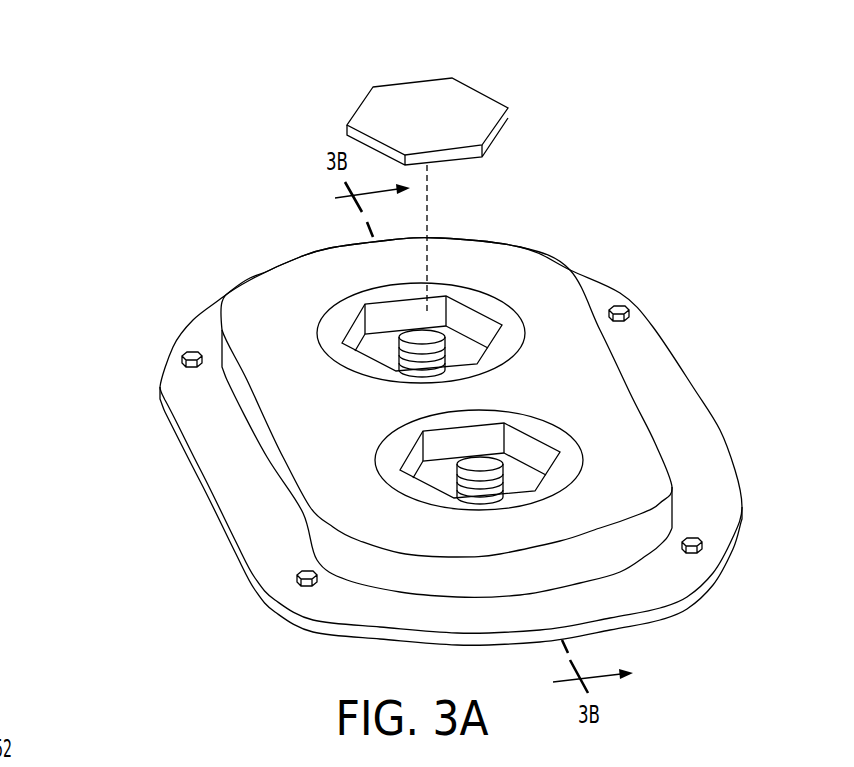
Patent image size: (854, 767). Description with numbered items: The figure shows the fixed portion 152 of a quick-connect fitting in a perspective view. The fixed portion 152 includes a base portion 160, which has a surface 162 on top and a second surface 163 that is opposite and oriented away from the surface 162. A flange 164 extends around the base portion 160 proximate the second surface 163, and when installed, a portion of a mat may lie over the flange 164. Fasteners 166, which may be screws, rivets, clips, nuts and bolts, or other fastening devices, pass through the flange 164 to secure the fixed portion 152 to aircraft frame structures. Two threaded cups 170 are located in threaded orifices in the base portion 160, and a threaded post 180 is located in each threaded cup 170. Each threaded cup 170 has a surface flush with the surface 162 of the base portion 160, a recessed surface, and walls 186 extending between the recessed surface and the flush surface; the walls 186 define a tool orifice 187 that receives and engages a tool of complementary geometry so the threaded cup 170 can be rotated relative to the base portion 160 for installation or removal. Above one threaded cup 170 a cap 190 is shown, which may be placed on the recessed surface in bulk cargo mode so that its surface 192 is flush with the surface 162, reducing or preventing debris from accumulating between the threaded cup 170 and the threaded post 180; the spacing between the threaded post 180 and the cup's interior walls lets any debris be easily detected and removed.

The fixed portion 152 is at (180, 195).
The base portion 160 is at (523, 288).
The surface 162 is at (288, 391).
The second surface 163 is at (260, 588).
The flange 164 is at (220, 420).
The fasteners 166 is at (617, 303).
The threaded cup 170 is at (327, 323).
The threaded post 180 is at (407, 337).
The walls 186 is at (415, 458).
The tool orifice 187 is at (523, 430).
The cap 190 is at (398, 100).
The surface 192 is at (424, 128).